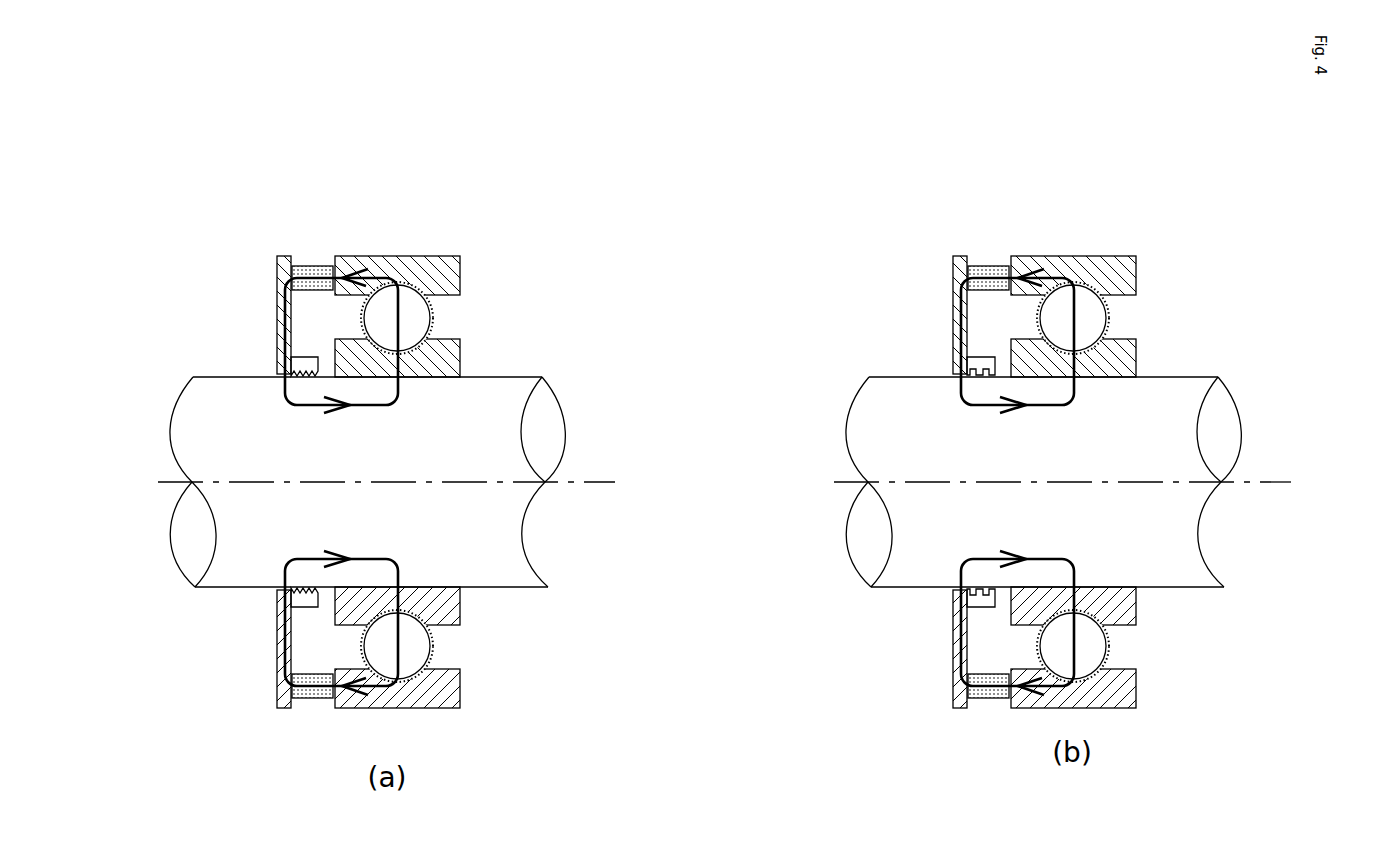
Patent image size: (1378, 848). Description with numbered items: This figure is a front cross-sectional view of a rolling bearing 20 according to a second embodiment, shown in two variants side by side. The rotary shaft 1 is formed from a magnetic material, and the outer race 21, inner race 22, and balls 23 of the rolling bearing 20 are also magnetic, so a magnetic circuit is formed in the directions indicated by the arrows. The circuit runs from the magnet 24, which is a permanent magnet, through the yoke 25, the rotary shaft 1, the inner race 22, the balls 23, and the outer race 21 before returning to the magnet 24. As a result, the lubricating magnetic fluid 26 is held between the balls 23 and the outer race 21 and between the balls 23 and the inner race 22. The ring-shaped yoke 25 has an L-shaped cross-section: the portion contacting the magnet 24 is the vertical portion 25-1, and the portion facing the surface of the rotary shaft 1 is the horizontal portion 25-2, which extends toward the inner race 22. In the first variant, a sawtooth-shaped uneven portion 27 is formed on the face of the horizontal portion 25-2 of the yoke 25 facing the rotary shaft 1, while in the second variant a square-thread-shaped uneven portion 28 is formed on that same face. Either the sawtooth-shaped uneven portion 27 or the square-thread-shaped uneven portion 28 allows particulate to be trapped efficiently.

The rotary shaft 1 is at (406, 470).
The rolling bearing 20 is at (363, 77).
The outer race 21 is at (420, 256).
The inner race 22 is at (461, 360).
The balls 23 is at (428, 317).
The magnet 24 is at (313, 266).
The yoke 25 is at (285, 270).
The vertical portion 25-1 is at (287, 338).
The horizontal portion 25-2 is at (303, 352).
The lubricating magnetic fluid 26 is at (396, 284).
The sawtooth-shaped uneven portion 27 is at (285, 402).
The square-thread-shaped uneven portion 28 is at (961, 403).